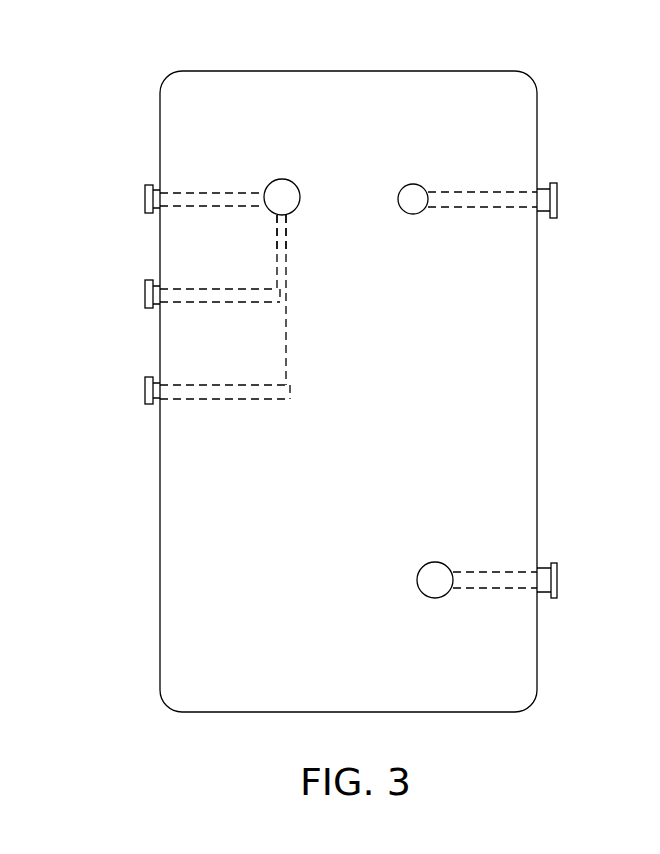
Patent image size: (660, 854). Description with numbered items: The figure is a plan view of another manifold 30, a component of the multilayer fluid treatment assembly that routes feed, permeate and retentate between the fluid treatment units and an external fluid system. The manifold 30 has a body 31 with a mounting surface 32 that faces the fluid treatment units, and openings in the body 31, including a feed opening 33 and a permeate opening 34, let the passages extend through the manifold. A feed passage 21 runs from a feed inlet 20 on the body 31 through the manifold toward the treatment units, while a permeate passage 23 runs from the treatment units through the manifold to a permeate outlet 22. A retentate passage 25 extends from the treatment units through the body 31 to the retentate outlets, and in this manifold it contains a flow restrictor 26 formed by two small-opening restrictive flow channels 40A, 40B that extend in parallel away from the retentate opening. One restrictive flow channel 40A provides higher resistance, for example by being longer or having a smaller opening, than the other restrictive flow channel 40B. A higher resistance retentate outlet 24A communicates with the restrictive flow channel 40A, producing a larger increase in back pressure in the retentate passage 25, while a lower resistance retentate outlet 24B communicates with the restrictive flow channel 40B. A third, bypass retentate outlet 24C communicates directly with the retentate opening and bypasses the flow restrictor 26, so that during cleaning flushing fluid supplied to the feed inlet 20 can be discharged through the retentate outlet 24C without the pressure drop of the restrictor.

The feed inlet 20 is at (546, 183).
The feed passage 21 is at (466, 200).
The permeate outlet 22 is at (545, 565).
The permeate passage 23 is at (485, 580).
The retentate outlet 24A is at (155, 405).
The retentate outlet 24B is at (150, 308).
The bypass retentate outlet 24C is at (155, 187).
The retentate passage 25 is at (205, 202).
The flow restrictor 26 is at (277, 260).
The manifold 30 is at (482, 319).
The body 31 is at (230, 535).
The mounting surface 32 is at (380, 388).
The feed opening 33 is at (413, 197).
The permeate opening 34 is at (437, 578).
The restrictive flow channel 40A is at (288, 227).
The restrictive flow channel 40B is at (273, 227).